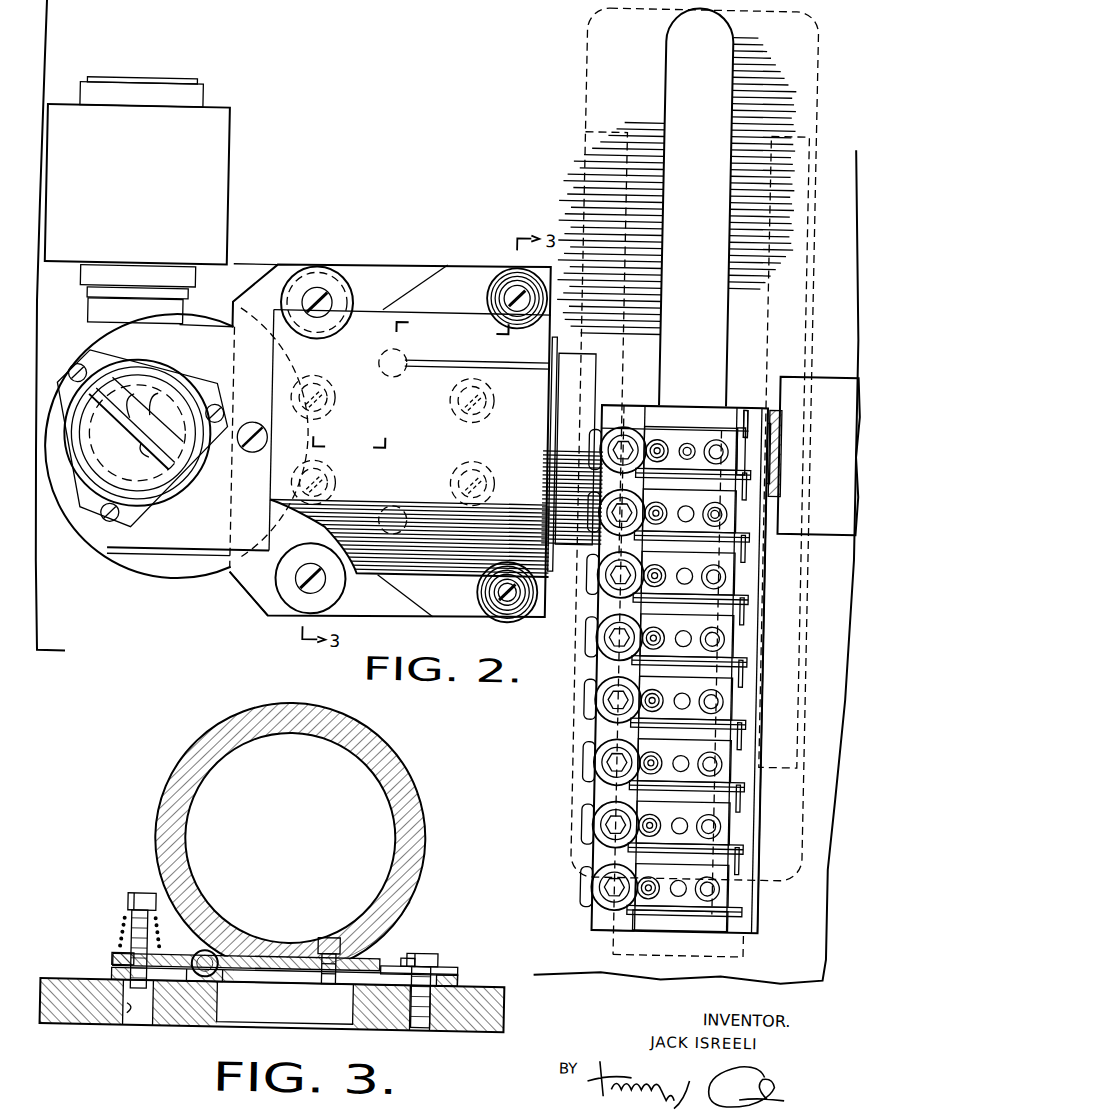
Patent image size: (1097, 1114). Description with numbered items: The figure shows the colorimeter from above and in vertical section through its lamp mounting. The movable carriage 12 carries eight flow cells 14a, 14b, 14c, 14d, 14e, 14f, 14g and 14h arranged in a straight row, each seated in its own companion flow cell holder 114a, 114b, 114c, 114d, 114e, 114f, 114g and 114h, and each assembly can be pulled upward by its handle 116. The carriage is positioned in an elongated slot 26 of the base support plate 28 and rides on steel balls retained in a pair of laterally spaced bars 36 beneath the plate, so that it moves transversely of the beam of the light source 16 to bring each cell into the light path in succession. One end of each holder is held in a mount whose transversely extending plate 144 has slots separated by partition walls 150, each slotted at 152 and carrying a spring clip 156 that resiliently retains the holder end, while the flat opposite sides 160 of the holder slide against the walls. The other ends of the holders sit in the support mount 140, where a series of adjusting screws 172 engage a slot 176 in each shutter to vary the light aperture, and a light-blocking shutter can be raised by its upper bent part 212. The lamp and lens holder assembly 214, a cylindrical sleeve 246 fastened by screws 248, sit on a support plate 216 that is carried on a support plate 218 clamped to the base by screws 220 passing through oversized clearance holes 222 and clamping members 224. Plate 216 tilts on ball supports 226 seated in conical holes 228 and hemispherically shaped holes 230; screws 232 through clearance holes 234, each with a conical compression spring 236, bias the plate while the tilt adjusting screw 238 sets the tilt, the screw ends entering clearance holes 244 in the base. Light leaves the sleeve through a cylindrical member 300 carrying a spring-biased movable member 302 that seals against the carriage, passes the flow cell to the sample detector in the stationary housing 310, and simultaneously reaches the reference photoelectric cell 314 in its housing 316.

In FIG. 2, the movable carriage 12 is at (608, 908).
In FIG. 2, the flow cell 14a is at (670, 426).
In FIG. 2, the flow cell 14b is at (670, 489).
In FIG. 2, the flow cell 14c is at (684, 552).
In FIG. 2, the flow cell 14d is at (670, 608).
In FIG. 2, the flow cell 14e is at (670, 670).
In FIG. 2, the flow cell 14f is at (670, 733).
In FIG. 2, the flow cell 14g is at (680, 801).
In FIG. 2, the flow cell 14h is at (670, 858).
In FIG. 2, the light source 16 is at (180, 370).
In FIG. 2, the elongated slot 26 is at (676, 207).
In FIG. 2, the base support plate 28 is at (336, 173).
In FIG. 3, the base support plate 28 is at (70, 963).
In FIG. 2, the laterally spaced bars 36 is at (612, 118).
In FIG. 2, the flow cell holder 114a is at (658, 420).
In FIG. 2, the flow cell holder 114b is at (660, 484).
In FIG. 2, the flow cell holder 114c is at (650, 540).
In FIG. 2, the flow cell holder 114d is at (660, 603).
In FIG. 2, the flow cell holder 114e is at (660, 666).
In FIG. 2, the flow cell holder 114f is at (660, 729).
In FIG. 2, the flow cell holder 114g is at (660, 800).
In FIG. 2, the flow cell holder 114h is at (660, 853).
In FIG. 2, the handle 116 is at (696, 424).
In FIG. 2, the support mount 140 is at (610, 930).
In FIG. 2, the transversely extending plate 144 is at (778, 900).
In FIG. 2, the partition walls 150 is at (746, 490).
In FIG. 2, the slot in partition wall 152 is at (747, 452).
In FIG. 2, the spring clip 156 is at (754, 396).
In FIG. 2, the opposite sides of holder 160 is at (666, 922).
In FIG. 2, the adjusting screws 172 is at (635, 428).
In FIG. 2, the slot 176 is at (785, 534).
In FIG. 2, the upper bent part 212 is at (608, 883).
In FIG. 2, the lens holder assembly 214 is at (418, 572).
In FIG. 3, the lens holder assembly 214 is at (412, 730).
In FIG. 2, the support plate 216 is at (190, 547).
In FIG. 3, the support plate 216 is at (131, 970).
In FIG. 2, the support plate 218 is at (255, 588).
In FIG. 3, the support plate 218 is at (477, 972).
In FIG. 2, the screws 220 is at (325, 292).
In FIG. 3, the screws 220 is at (441, 945).
In FIG. 3, the clearance holes 222 is at (477, 962).
In FIG. 2, the clamping member 224 is at (352, 290).
In FIG. 3, the clamping member 224 is at (440, 950).
In FIG. 2, the ball supports 226 is at (410, 345).
In FIG. 3, the ball supports 226 is at (250, 950).
In FIG. 3, the conical holes 228 is at (230, 980).
In FIG. 3, the hemispherically shaped holes 230 is at (214, 950).
In FIG. 2, the screws 232 is at (515, 612).
In FIG. 3, the screws 232 is at (160, 890).
In FIG. 3, the clearance holes 234 is at (135, 950).
In FIG. 2, the compression spring 236 is at (530, 612).
In FIG. 3, the compression spring 236 is at (138, 913).
In FIG. 2, the tilt adjusting screw 238 is at (263, 447).
In FIG. 3, the clearance holes 244 is at (145, 1010).
In FIG. 3, the cylindrical sleeve 246 is at (418, 816).
In FIG. 2, the screws 248 is at (495, 393).
In FIG. 3, the screws 248 is at (348, 977).
In FIG. 2, the cylindrical member 300 is at (575, 342).
In FIG. 2, the movable member 302 is at (612, 395).
In FIG. 2, the stationary housing 310 is at (832, 361).
In FIG. 2, the reference photoelectric cell 314 is at (205, 88).
In FIG. 2, the housing 316 is at (232, 160).